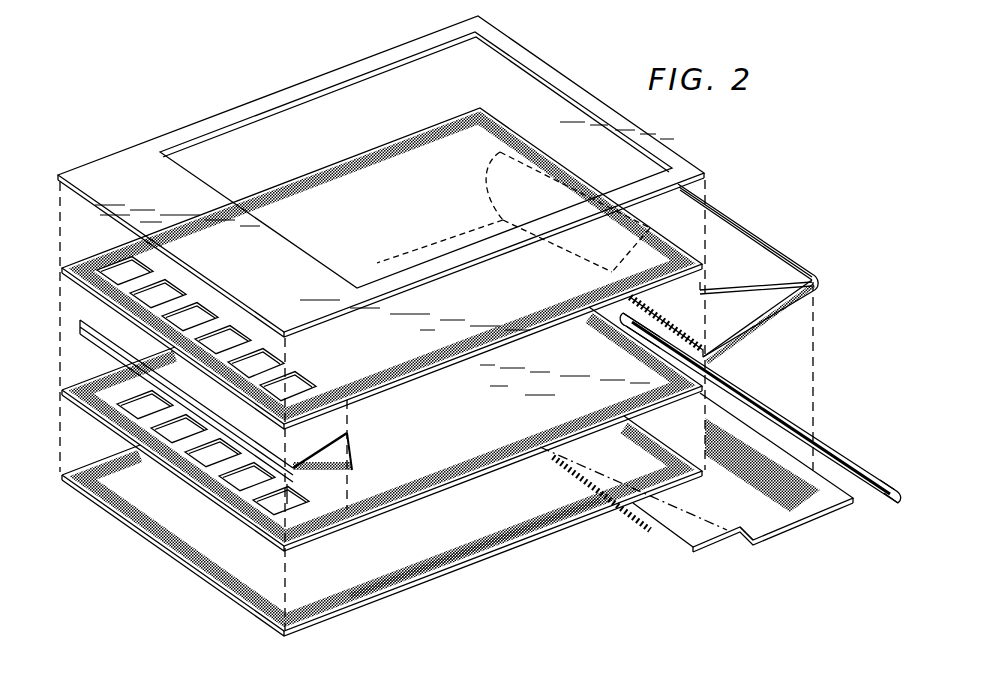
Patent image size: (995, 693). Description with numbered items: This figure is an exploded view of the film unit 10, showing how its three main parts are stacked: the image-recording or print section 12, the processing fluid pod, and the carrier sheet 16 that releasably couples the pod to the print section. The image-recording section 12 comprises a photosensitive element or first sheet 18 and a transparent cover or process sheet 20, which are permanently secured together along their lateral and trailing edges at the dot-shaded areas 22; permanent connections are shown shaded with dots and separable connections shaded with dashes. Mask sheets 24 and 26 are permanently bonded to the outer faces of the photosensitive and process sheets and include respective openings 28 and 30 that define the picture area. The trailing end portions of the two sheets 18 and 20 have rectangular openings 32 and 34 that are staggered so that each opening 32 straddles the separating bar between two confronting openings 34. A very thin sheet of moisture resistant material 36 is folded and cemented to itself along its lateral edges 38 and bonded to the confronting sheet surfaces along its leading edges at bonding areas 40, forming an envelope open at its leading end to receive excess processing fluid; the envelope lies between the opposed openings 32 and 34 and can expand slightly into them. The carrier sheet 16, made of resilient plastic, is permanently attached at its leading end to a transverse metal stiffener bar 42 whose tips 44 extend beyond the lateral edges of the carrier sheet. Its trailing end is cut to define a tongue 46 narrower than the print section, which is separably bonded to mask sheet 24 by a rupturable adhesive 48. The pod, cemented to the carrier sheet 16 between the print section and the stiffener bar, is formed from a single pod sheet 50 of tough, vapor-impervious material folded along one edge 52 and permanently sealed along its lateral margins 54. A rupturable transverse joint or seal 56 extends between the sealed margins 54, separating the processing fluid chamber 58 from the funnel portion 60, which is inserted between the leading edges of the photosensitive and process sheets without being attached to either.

The film unit 10 is at (172, 126).
The image-recording or print section 12 is at (346, 68).
The carrier sheet 16 is at (757, 518).
The photosensitive element or first sheet 18 is at (457, 410).
The transparent cover or process sheet 20 is at (405, 339).
The shaded areas 22 is at (427, 473).
The mask sheet 24 is at (412, 588).
The mask sheet 26 is at (133, 188).
The opening 28 is at (483, 543).
The opening 30 is at (307, 98).
The rectangular openings 32 is at (247, 460).
The rectangular openings 34 is at (267, 358).
The sheet of moisture resistant material 36 is at (110, 323).
The lateral edges 38 is at (352, 466).
The bonding areas 40 is at (338, 436).
The transverse metal stiffener bar 42 is at (838, 450).
The tips 44 is at (623, 318).
The tongue 46 is at (730, 530).
The rupturable adhesive 48 is at (673, 517).
The pod sheet 50 is at (730, 245).
The folded edge 52 is at (808, 267).
The lateral margins 54 is at (743, 312).
The rupturable transverse joint or seal 56 is at (677, 323).
The processing fluid chamber 58 is at (767, 296).
The funnel portion 60 is at (495, 160).